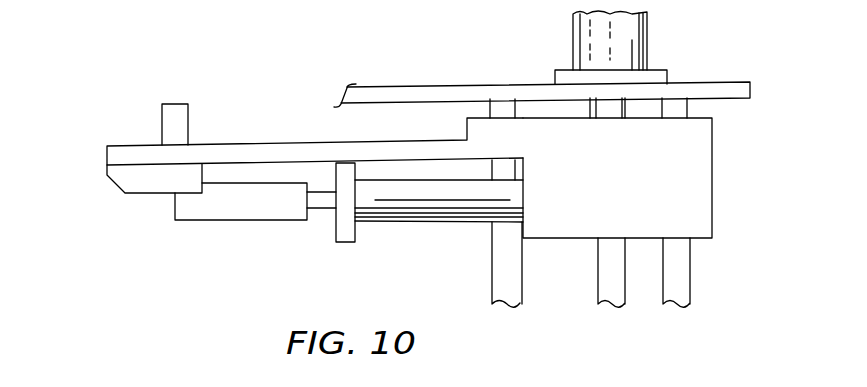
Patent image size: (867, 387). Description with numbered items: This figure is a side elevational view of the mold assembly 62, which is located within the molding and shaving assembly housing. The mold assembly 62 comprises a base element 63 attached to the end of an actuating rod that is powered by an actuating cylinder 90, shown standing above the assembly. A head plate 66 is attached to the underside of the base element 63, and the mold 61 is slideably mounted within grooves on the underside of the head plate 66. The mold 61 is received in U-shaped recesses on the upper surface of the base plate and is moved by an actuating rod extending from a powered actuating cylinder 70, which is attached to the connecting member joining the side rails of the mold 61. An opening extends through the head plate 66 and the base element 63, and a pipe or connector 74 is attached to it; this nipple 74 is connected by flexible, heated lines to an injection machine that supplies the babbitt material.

The mold 61 is at (238, 222).
The mold assembly 62 is at (713, 182).
The base element 63 is at (106, 157).
The head plate 66 is at (148, 197).
The actuating cylinder 70 is at (425, 223).
The connector 74 is at (172, 103).
The actuating cylinder 90 is at (648, 45).